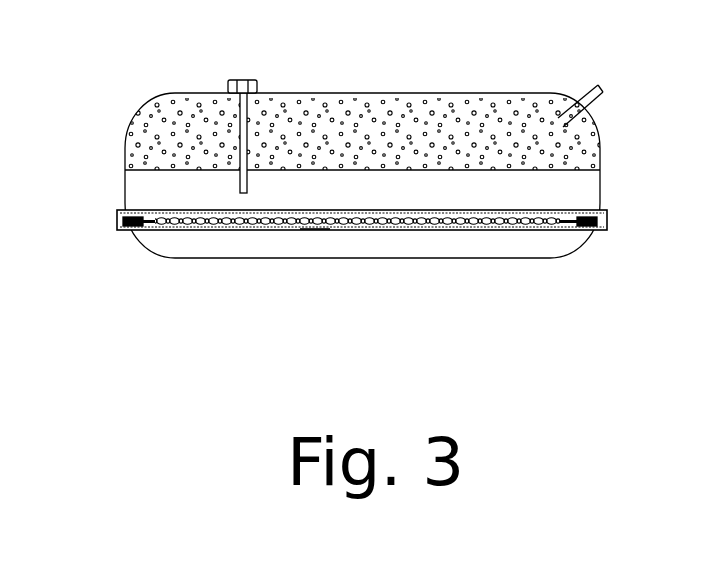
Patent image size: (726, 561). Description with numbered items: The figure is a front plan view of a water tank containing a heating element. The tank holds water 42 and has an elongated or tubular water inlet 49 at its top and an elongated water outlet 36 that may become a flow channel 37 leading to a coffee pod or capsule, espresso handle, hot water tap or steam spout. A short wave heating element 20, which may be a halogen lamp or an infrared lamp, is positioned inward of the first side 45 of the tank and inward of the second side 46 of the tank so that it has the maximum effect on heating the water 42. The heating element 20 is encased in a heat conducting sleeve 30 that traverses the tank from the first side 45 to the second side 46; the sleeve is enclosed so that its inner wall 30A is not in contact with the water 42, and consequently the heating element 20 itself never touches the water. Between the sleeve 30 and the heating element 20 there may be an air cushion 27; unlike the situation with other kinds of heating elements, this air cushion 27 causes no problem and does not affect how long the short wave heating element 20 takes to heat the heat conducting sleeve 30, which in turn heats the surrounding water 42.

The short wave heating element 20 is at (117, 222).
The air cushion 27 is at (192, 226).
The heat conducting sleeve 30 is at (250, 232).
The inner wall of heat conducting sleeve 30A is at (313, 232).
The water outlet 36 is at (597, 100).
The flow channel 37 is at (582, 95).
The water 42 is at (520, 188).
The first side of water tank 45 is at (133, 128).
The second side of water tank 46 is at (390, 93).
The water inlet 49 is at (250, 78).